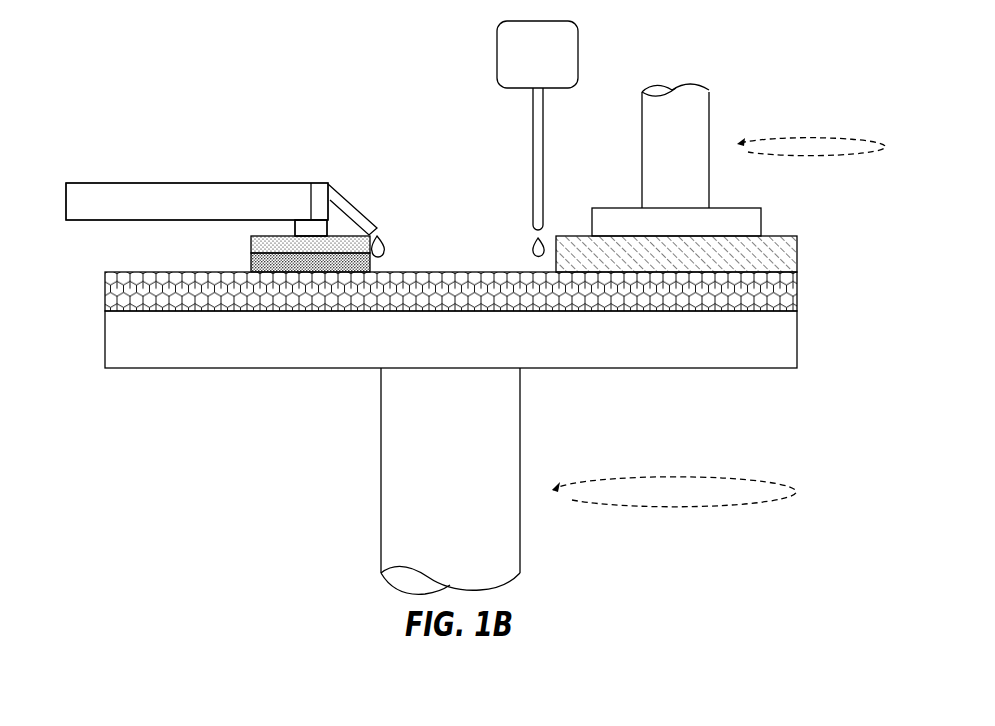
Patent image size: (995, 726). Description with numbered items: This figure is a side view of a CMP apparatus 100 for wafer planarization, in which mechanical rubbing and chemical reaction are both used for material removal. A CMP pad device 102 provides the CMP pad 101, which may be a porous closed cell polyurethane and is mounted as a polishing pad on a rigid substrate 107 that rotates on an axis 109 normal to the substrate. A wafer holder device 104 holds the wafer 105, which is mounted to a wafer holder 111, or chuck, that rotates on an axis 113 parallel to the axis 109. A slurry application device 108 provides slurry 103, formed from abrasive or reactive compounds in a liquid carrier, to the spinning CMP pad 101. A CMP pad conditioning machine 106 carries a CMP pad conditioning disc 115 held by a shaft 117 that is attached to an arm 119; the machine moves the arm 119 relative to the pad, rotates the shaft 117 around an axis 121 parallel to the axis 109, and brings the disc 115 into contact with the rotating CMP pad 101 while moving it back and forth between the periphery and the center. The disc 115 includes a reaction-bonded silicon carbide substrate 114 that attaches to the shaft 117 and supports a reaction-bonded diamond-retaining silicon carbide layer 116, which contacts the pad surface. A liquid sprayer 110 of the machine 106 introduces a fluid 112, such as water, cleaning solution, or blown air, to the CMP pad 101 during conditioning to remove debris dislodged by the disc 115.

The CMP apparatus 100 is at (796, 40).
The CMP pad 101 is at (162, 272).
The CMP pad device 102 is at (694, 378).
The slurry 103 is at (532, 250).
The wafer holder device 104 is at (797, 114).
The wafer 105 is at (797, 251).
The CMP pad conditioning machine 106 is at (172, 170).
The rigid substrate 107 is at (797, 341).
The slurry application device 108 is at (578, 58).
The axis 109 is at (506, 441).
The liquid sprayer 110 is at (351, 197).
The wafer holder 111 is at (762, 222).
The fluid 112 is at (385, 249).
The axis 113 is at (705, 110).
The substrate 114 is at (251, 244).
The CMP pad conditioning disc 115 is at (372, 264).
The RB-DSiC layer 116 is at (251, 262).
The shaft 117 is at (297, 228).
The arm 119 is at (88, 183).
The axis 121 is at (311, 228).